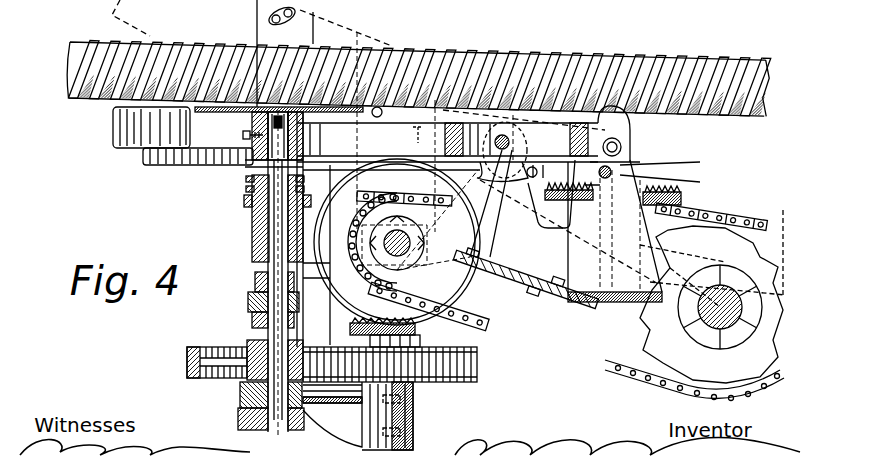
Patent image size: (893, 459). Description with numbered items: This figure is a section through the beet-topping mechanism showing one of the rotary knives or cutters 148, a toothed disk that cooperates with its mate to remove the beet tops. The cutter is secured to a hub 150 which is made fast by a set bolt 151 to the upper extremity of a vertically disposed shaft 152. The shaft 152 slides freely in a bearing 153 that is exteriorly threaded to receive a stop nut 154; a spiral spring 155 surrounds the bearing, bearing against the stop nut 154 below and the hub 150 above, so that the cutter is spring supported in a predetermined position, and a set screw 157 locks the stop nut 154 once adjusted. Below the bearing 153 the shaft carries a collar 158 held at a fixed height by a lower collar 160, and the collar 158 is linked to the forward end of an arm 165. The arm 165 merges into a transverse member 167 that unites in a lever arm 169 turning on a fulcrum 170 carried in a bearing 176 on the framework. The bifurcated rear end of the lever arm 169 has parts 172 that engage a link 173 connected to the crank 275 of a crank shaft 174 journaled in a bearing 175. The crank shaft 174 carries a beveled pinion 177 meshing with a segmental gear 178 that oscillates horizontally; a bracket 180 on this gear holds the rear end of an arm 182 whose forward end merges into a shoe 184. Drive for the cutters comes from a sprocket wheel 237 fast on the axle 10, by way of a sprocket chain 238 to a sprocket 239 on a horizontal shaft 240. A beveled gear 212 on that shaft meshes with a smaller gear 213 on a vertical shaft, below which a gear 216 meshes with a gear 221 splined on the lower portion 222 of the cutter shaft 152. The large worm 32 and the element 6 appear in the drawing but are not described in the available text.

The shaft 6 is at (383, 43).
The axle 10 is at (711, 304).
The worm 32 is at (418, 73).
The rotary knife or cutter 148 is at (213, 107).
The hub 150 is at (252, 125).
The set bolt 151 is at (247, 140).
The vertically disposed shaft 152 is at (250, 228).
The bearing 153 is at (252, 250).
The stop nut 154 is at (250, 207).
The spiral spring 155 is at (247, 186).
The set screw 157 is at (255, 278).
The collar 158 is at (249, 300).
The lower collar 160 is at (251, 318).
The arm 165 is at (447, 189).
The transverse member 167 is at (455, 130).
The lever arm 169 is at (550, 146).
The fulcrum 170 is at (565, 203).
The bifurcated parts 172 is at (622, 140).
The link 173 is at (640, 160).
The crank shaft 174 is at (632, 167).
The bearing 175 is at (700, 212).
The bearing 176 is at (540, 204).
The beveled pinion 177 is at (640, 152).
The segmental gear 178 is at (632, 174).
The bracket 180 is at (549, 188).
The arm 182 is at (335, 165).
The shoe 184 is at (127, 148).
The beveled gear 212 is at (391, 250).
The gear 213 is at (355, 330).
The gear 216 is at (478, 370).
The gear 221 is at (186, 362).
The lower portion of shaft 222 is at (240, 394).
The sprocket wheel 237 is at (650, 330).
The sprocket chain 238 is at (605, 350).
The sprocket 239 is at (458, 296).
The horizontal shaft 240 is at (395, 230).
The crank 275 is at (645, 178).